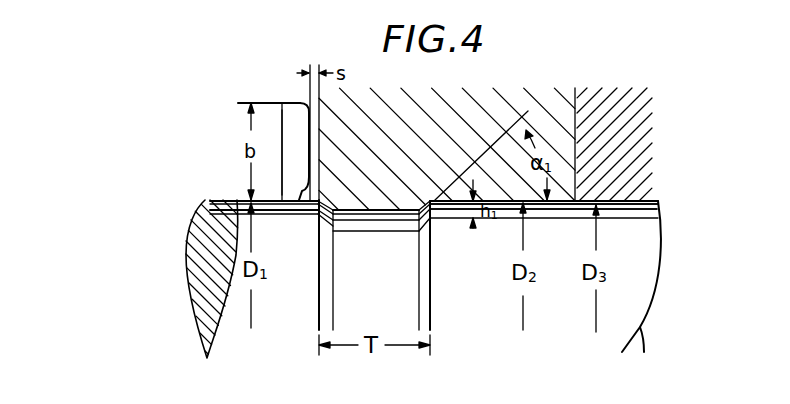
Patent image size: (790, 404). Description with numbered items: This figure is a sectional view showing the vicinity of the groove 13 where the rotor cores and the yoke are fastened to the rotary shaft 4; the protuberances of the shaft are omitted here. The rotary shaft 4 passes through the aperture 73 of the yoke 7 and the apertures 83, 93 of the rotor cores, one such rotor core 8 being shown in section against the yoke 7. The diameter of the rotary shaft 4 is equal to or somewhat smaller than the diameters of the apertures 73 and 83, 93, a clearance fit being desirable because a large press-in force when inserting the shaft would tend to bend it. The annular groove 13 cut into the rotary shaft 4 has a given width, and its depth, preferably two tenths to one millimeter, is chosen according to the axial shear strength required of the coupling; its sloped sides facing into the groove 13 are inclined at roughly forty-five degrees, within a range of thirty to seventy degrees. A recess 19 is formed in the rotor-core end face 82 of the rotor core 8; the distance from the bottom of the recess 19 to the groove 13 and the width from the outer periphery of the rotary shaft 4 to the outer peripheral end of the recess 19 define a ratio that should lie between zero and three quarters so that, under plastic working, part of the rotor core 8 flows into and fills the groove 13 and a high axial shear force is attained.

The rotary shaft 4 is at (238, 199).
The yoke 7 is at (636, 143).
The rotor core 8 is at (297, 98).
The groove 13 is at (325, 243).
The recess 19 is at (294, 126).
The aperture 73 is at (622, 206).
The rotor-core end face 82 is at (284, 98).
The aperture 83 is at (558, 205).
The aperture 93 is at (544, 236).